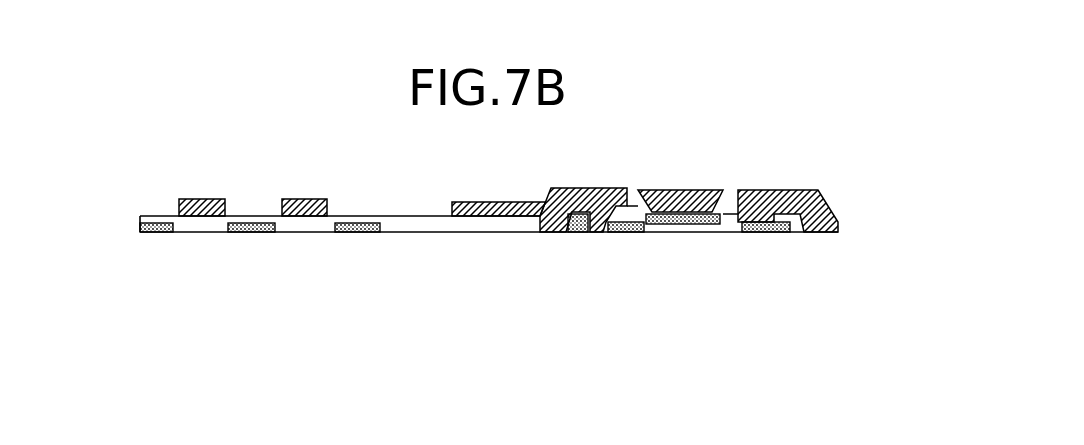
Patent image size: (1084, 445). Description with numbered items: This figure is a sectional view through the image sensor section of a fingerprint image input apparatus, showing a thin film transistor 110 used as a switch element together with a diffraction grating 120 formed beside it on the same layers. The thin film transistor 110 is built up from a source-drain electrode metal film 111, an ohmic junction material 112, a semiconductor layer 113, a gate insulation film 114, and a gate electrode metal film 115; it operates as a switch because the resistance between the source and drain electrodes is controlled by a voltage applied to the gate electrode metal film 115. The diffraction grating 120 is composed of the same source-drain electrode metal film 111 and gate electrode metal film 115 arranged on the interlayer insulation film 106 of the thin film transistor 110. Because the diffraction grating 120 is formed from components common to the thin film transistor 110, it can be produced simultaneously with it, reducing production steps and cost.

The interlayer insulation film 106 is at (418, 224).
The thin film transistor 110 is at (689, 237).
The source-drain electrode metal film 111 is at (358, 232).
The ohmic junction material 112 is at (636, 236).
The semiconductor layer 113 is at (682, 236).
The gate insulation film 114 is at (733, 200).
The gate electrode metal film 115 is at (308, 198).
The diffraction grating 120 is at (441, 234).